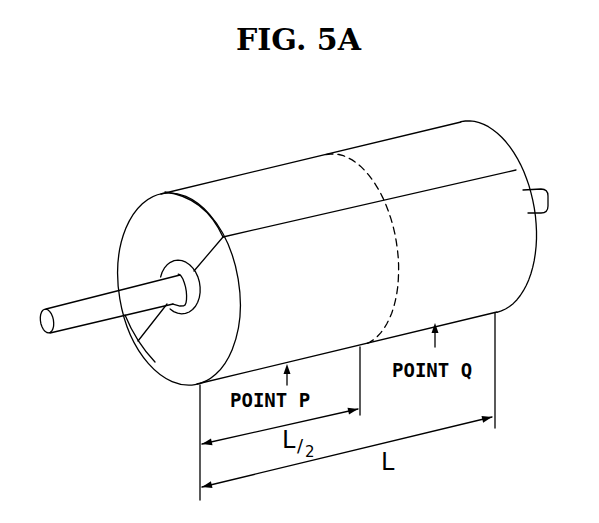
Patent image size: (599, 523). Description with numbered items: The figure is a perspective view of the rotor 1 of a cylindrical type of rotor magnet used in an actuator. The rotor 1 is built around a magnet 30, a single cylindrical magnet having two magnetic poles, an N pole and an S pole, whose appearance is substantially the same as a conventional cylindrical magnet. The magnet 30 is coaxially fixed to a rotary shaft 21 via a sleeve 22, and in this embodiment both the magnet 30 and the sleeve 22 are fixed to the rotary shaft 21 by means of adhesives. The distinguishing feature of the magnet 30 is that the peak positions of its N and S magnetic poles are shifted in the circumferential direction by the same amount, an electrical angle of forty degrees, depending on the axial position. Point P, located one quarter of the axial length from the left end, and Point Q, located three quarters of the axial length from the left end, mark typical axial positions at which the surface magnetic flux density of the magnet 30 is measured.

The rotor 1 is at (291, 239).
The rotary shaft 21 is at (60, 311).
The sleeve 22 is at (155, 362).
The magnet 30 is at (291, 162).